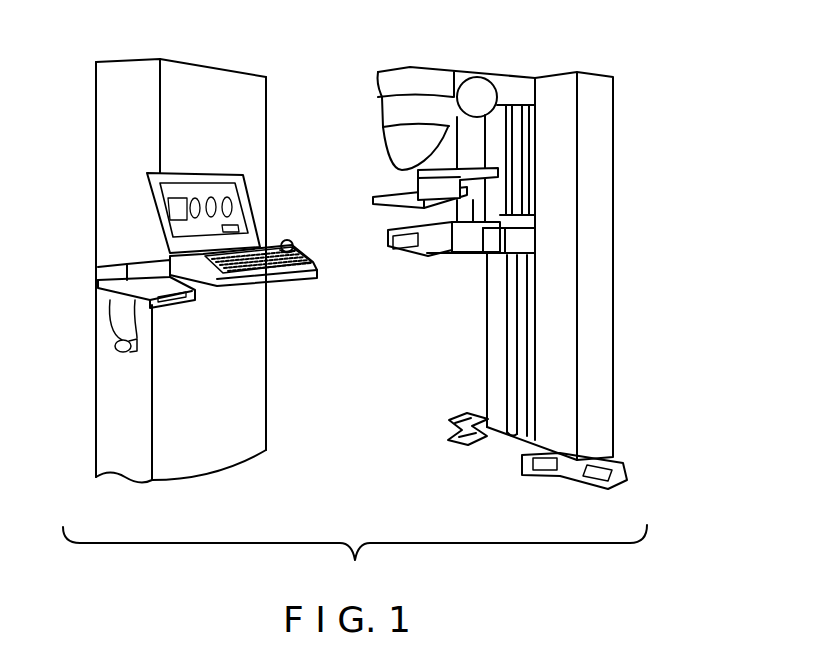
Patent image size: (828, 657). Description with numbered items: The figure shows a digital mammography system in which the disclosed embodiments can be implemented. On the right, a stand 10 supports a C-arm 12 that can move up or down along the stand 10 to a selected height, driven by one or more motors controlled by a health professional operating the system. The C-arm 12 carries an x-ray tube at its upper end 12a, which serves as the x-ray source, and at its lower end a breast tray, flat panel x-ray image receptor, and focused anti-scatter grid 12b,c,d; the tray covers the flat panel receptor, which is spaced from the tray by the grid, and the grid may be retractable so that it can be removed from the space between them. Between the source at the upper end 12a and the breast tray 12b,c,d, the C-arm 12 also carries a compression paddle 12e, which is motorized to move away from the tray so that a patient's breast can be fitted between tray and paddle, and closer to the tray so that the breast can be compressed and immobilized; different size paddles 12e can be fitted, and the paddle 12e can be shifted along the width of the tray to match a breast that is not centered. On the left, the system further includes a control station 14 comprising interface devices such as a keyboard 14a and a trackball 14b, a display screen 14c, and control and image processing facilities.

The stand 10 is at (600, 242).
The C-arm 12 is at (506, 60).
The upper end of C-arm (x-ray tube / source) 12a is at (378, 88).
The compression paddle 12e is at (376, 195).
The breast tray, flat panel x-ray image receptor, and focused anti-scatter grid 12b,c,d is at (391, 251).
The control station 14 is at (181, 52).
The keyboard 14a is at (277, 284).
The trackball 14b is at (287, 241).
The display screen 14c is at (197, 183).